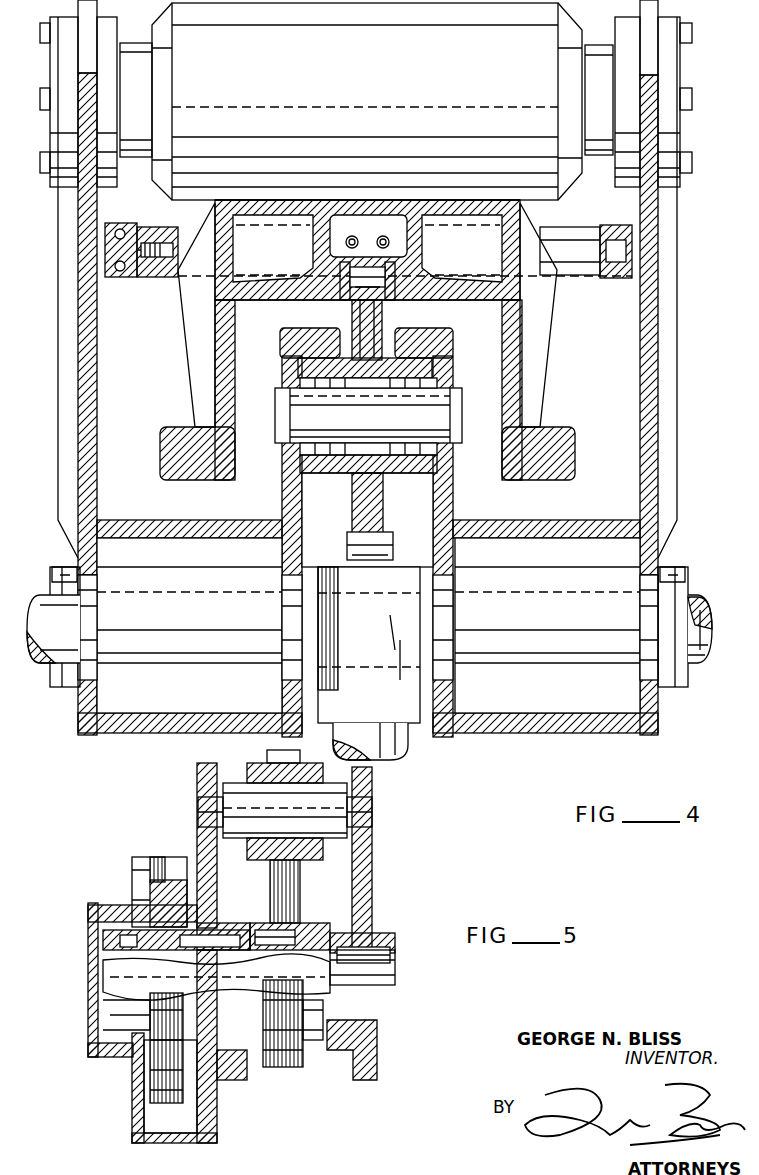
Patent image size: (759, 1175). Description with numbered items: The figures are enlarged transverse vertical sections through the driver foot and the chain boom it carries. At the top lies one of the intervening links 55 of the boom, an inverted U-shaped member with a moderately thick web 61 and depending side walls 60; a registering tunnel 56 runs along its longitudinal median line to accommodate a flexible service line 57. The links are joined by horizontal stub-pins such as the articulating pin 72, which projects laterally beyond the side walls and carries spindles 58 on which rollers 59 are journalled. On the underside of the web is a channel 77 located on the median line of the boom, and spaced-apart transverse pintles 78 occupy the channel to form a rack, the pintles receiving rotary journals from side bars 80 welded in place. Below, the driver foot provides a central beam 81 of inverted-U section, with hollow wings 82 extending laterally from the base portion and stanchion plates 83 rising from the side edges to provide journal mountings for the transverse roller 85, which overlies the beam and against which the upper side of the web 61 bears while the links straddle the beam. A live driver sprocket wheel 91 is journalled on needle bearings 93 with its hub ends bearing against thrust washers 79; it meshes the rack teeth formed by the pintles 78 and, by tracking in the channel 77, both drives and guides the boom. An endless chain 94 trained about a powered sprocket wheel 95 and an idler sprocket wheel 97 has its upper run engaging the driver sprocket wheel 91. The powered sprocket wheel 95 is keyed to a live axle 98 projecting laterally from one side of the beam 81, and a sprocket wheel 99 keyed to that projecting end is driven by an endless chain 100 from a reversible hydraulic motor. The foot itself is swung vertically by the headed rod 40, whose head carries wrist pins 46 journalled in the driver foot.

In FIG. 4, the headed rod 40 is at (385, 752).
In FIG. 4, the wrist pins 46 is at (696, 650).
In FIG. 4, the intervening links 55 is at (548, 390).
In FIG. 4, the registering tunnels 56 is at (385, 233).
In FIG. 4, the service line 57 is at (352, 233).
In FIG. 4, the spindles 58 is at (106, 256).
In FIG. 4, the rollers 59 is at (124, 278).
In FIG. 4, the side walls 60 is at (228, 368).
In FIG. 4, the web 61 is at (463, 203).
In FIG. 4, the articulating pin 72 is at (155, 279).
In FIG. 4, the channel 77 is at (383, 268).
In FIG. 4, the pintles 78 is at (383, 316).
In FIG. 4, the thrust washers 79 is at (298, 465).
In FIG. 4, the side bars 80 is at (320, 262).
In FIG. 4, the central beam 81 is at (453, 508).
In FIG. 5, the central beam 81 is at (374, 889).
In FIG. 4, the hollow wings 82 is at (130, 725).
In FIG. 4, the stanchion plates 83 is at (90, 344).
In FIG. 4, the transverse roller 85 is at (270, 75).
In FIG. 4, the driver sprocket wheel 91 is at (352, 316).
In FIG. 4, the needle bearings 93 is at (398, 396).
In FIG. 5, the endless chain 94 is at (310, 1060).
In FIG. 5, the powered sprocket wheel 95 is at (283, 1070).
In FIG. 5, the idler sprocket wheel 97 is at (300, 863).
In FIG. 5, the live axle 98 is at (120, 978).
In FIG. 5, the sprocket wheel 99 is at (163, 1063).
In FIG. 5, the endless chain 100 is at (150, 860).